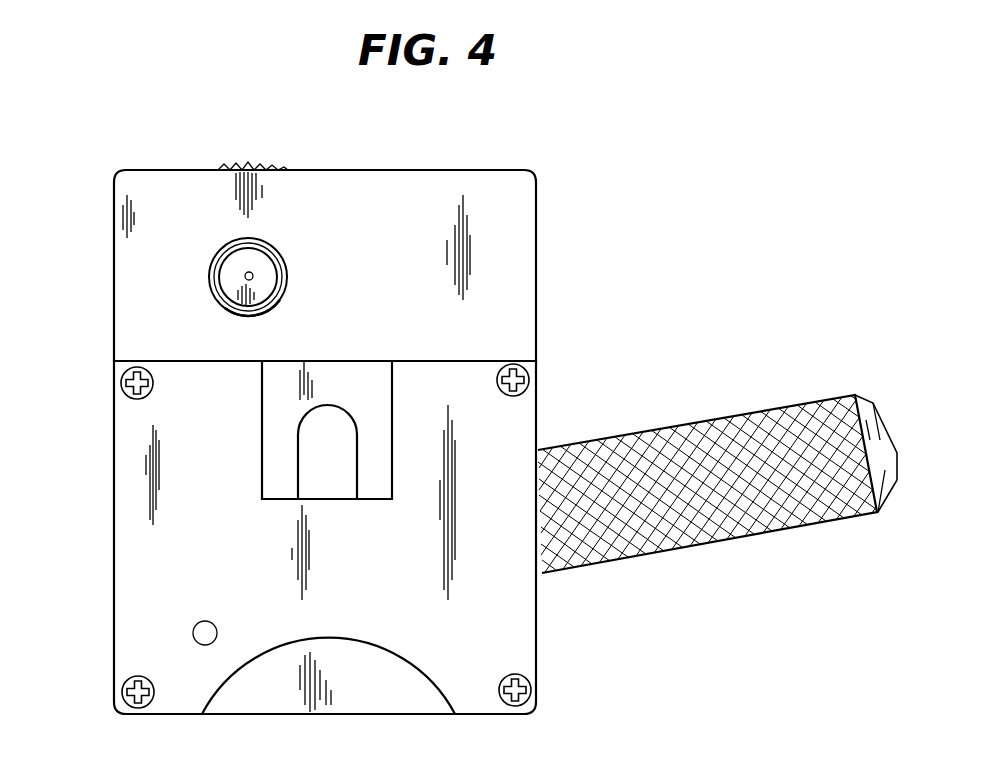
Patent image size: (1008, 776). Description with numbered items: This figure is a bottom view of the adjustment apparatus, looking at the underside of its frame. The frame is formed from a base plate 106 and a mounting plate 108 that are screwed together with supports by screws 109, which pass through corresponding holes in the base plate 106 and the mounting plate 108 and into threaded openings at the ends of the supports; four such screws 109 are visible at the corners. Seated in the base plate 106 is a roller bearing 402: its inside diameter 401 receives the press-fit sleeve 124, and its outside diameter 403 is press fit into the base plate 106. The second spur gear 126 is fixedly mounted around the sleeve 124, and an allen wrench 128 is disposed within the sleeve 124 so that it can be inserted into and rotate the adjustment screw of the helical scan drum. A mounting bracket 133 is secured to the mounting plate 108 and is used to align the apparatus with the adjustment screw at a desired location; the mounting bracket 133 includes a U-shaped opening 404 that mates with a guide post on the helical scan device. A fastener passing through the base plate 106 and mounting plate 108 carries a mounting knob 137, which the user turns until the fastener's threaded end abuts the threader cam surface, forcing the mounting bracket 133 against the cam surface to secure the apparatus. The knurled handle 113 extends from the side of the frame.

The base plate 106 is at (524, 216).
The mounting plate 108 is at (526, 617).
The screws 109 is at (528, 380).
The knurled handle 113 is at (668, 556).
The sleeve 124 is at (246, 258).
The second spur gear 126 is at (252, 168).
The allen wrench 128 is at (252, 272).
The mounting bracket 133 is at (377, 377).
The mounting knob 137 is at (205, 621).
The inside diameter 401 is at (210, 272).
The roller bearing 402 is at (210, 284).
The outside diameter 403 is at (228, 312).
The U-shaped opening 404 is at (312, 462).